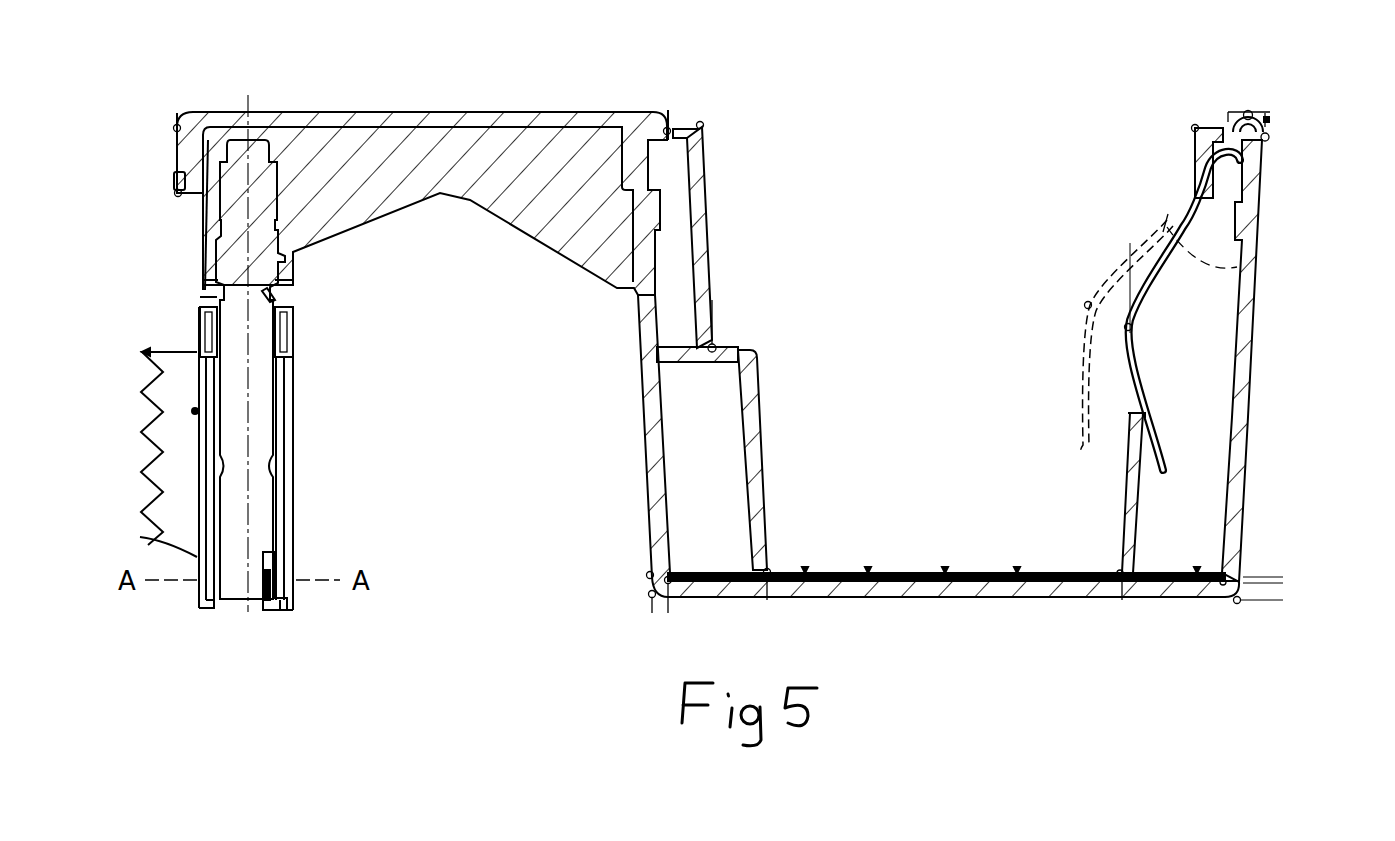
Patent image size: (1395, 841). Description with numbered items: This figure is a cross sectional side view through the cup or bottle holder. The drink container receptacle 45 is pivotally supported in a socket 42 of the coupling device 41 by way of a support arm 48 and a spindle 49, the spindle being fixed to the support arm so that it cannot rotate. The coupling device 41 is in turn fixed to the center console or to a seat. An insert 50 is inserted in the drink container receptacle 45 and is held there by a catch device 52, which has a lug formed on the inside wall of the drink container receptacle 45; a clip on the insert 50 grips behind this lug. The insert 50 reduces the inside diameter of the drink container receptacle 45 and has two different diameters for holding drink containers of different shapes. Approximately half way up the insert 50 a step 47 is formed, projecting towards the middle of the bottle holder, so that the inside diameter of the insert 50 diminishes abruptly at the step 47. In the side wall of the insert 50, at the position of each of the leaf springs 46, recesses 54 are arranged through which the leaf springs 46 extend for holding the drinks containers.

The coupling device 41 is at (180, 352).
The socket 42 is at (197, 457).
The drink container receptacle 45 is at (1250, 476).
The leaf springs 46 is at (1170, 304).
The step 47 is at (717, 342).
The support arm 48 is at (488, 112).
The spindle 49 is at (207, 300).
The insert 50 is at (710, 178).
The catch device 52 is at (655, 360).
The recesses 54 is at (278, 590).